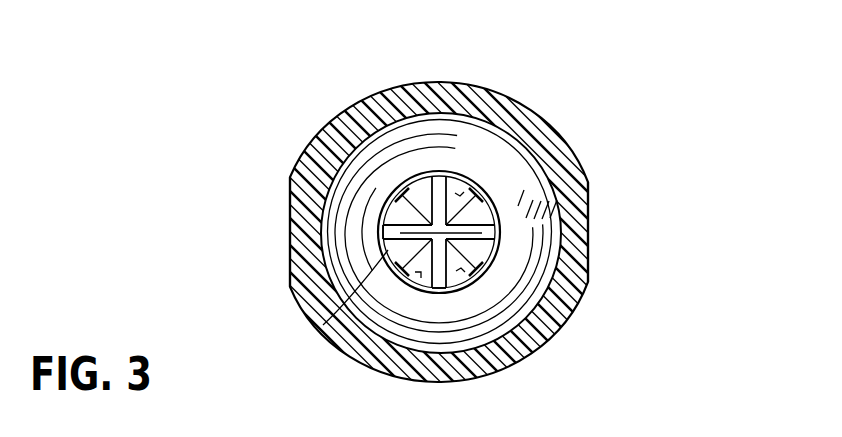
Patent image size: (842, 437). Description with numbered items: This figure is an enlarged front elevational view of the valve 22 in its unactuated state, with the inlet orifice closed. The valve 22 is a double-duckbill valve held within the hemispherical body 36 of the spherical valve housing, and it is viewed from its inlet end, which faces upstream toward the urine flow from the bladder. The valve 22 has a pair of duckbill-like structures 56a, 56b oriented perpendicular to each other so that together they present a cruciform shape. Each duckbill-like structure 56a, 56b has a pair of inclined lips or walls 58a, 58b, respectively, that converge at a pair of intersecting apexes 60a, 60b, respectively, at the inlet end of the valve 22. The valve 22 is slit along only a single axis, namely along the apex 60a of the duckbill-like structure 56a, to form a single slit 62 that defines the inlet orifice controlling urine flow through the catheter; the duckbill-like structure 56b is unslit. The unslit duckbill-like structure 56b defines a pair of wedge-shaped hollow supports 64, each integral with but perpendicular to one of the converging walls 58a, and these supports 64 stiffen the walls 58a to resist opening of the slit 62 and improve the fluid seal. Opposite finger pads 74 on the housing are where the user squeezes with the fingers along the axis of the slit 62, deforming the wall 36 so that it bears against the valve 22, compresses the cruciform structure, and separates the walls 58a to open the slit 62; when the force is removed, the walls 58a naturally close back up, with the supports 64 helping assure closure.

The valve 22 is at (412, 175).
The hemispherical body 36 is at (528, 355).
The duckbill-like structure 56a is at (500, 231).
The duckbill-like structure 56b is at (467, 177).
The inclined lips or walls 58a is at (490, 197).
The inclined lips or walls 58b is at (453, 193).
The apex 60a is at (390, 236).
The apex 60b is at (450, 273).
The slit 62 is at (400, 327).
The wedge-shaped hollow supports 64 is at (437, 172).
The finger pads 74 is at (290, 230).